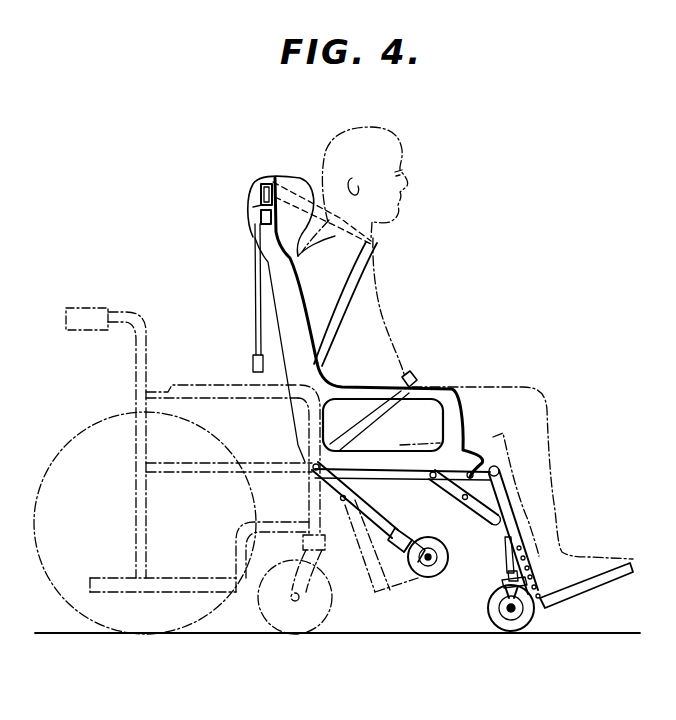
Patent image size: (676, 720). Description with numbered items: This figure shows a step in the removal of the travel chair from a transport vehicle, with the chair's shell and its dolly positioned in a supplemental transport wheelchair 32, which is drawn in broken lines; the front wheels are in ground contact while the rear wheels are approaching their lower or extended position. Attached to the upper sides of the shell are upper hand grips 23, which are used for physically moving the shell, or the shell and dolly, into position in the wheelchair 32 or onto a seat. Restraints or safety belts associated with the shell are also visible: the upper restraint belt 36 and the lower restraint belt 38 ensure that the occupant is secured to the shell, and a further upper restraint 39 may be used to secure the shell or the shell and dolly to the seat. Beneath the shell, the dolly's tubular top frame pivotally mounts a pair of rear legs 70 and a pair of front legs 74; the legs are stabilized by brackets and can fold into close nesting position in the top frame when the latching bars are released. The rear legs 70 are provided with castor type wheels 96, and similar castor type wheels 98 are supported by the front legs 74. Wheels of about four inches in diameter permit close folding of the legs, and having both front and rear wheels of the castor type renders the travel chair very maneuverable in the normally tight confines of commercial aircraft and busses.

The supplemental transport wheelchair 32 is at (108, 283).
The upper hand grips 23 is at (253, 207).
The further upper restraint 39 is at (255, 310).
The upper restraint belt 36 is at (374, 270).
The lower restraint belt 38 is at (413, 378).
The rear legs 70 is at (373, 518).
The front legs 74 is at (502, 530).
The castor type wheels 96 is at (446, 566).
The castor type wheels 98 is at (519, 631).